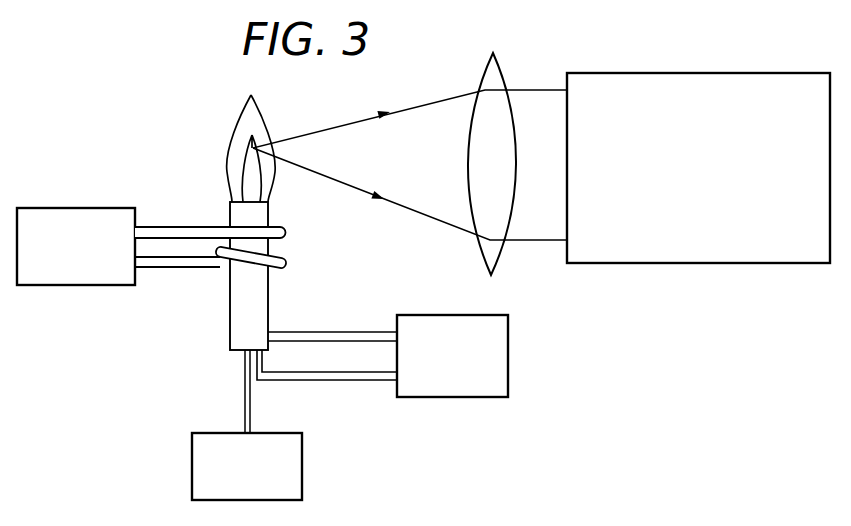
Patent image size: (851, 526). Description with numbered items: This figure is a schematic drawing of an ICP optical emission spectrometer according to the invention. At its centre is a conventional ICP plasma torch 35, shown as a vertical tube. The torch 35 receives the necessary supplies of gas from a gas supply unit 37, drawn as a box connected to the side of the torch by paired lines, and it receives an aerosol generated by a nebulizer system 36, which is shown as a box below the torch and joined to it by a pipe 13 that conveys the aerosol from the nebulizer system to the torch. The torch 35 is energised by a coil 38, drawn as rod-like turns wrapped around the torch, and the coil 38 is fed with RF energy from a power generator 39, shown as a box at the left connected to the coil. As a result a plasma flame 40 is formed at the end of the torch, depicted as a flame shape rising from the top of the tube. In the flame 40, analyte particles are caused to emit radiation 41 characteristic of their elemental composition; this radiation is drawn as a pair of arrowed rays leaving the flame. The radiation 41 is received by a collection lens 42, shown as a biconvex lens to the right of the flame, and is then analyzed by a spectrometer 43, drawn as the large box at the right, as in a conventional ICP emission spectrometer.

The pipe 13 is at (252, 404).
The ICP plasma torch 35 is at (238, 322).
The nebulizer system 36 is at (261, 479).
The gas supply unit 37 is at (466, 366).
The coil 38 is at (287, 263).
The power generator 39 is at (87, 259).
The plasma flame 40 is at (240, 146).
The radiation 41 is at (413, 112).
The collection lens 42 is at (488, 253).
The spectrometer 43 is at (715, 185).